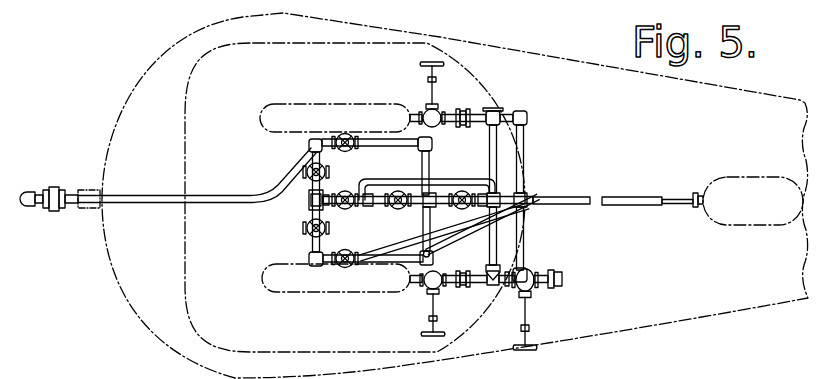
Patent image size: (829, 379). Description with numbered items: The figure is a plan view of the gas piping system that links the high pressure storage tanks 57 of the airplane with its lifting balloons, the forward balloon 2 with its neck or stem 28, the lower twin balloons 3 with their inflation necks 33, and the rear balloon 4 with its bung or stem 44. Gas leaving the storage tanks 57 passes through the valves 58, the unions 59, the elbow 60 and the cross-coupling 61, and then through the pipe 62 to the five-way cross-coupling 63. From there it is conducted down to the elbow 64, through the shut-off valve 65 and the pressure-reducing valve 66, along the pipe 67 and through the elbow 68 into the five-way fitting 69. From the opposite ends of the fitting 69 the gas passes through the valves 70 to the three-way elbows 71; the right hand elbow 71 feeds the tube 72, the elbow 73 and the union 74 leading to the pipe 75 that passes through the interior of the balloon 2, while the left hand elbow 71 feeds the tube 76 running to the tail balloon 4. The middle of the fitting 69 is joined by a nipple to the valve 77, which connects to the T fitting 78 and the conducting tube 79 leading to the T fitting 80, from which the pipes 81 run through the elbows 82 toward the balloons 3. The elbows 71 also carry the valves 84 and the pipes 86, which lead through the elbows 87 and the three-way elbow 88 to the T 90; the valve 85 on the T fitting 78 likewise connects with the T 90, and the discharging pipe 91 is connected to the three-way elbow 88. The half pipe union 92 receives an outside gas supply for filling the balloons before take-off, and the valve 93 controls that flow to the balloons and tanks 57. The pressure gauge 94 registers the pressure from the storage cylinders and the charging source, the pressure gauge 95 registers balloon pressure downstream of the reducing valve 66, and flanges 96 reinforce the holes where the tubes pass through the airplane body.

The lifting balloon 2 is at (608, 350).
The lower twin balloons 3 is at (184, 128).
The rear balloon 4 is at (760, 226).
The neck or stem of the balloon 28 is at (95, 191).
The inflation necks or stems 33 is at (500, 110).
The balloon bung or stem 44 is at (695, 193).
The high pressure gas storage tanks 57 is at (335, 201).
The valves 58 is at (422, 105).
The unions 59 is at (476, 112).
The elbow 60 is at (490, 126).
The cross-coupling 61 is at (494, 287).
The pipe 62 is at (498, 156).
The five-way cross-coupling 63 is at (528, 205).
The elbow 64 is at (481, 184).
The shut-off valve 65 is at (440, 186).
The pressure-reducing valve 66 is at (470, 228).
The pipe 67 is at (362, 180).
The elbow 68 is at (327, 194).
The five-way fitting 69 is at (308, 200).
The valves 70 is at (326, 170).
The three-way elbows 71 is at (316, 138).
The tube 72 is at (185, 195).
The elbow 73 is at (33, 187).
The union 74 is at (54, 211).
The pipe 75 is at (64, 192).
The tube 76 is at (672, 207).
The valve 77 is at (348, 209).
The T fitting 78 is at (370, 207).
The conducting tube 79 is at (421, 178).
The T fitting 80 is at (528, 194).
The pipes or tubes 81 is at (525, 142).
The elbows 82 is at (528, 118).
The valves 84 is at (338, 134).
The valve 85 is at (404, 209).
The pipes 86 is at (396, 139).
The elbow 87 is at (432, 144).
The three-way elbow 88 is at (435, 252).
The T 90 is at (424, 254).
The discharging pipe 91 is at (455, 232).
The half pipe union 92 is at (562, 282).
The valve 93 is at (530, 306).
The pressure gauge 94 is at (503, 184).
The pressure gauge 95 is at (309, 207).
The flanges 96 is at (378, 240).